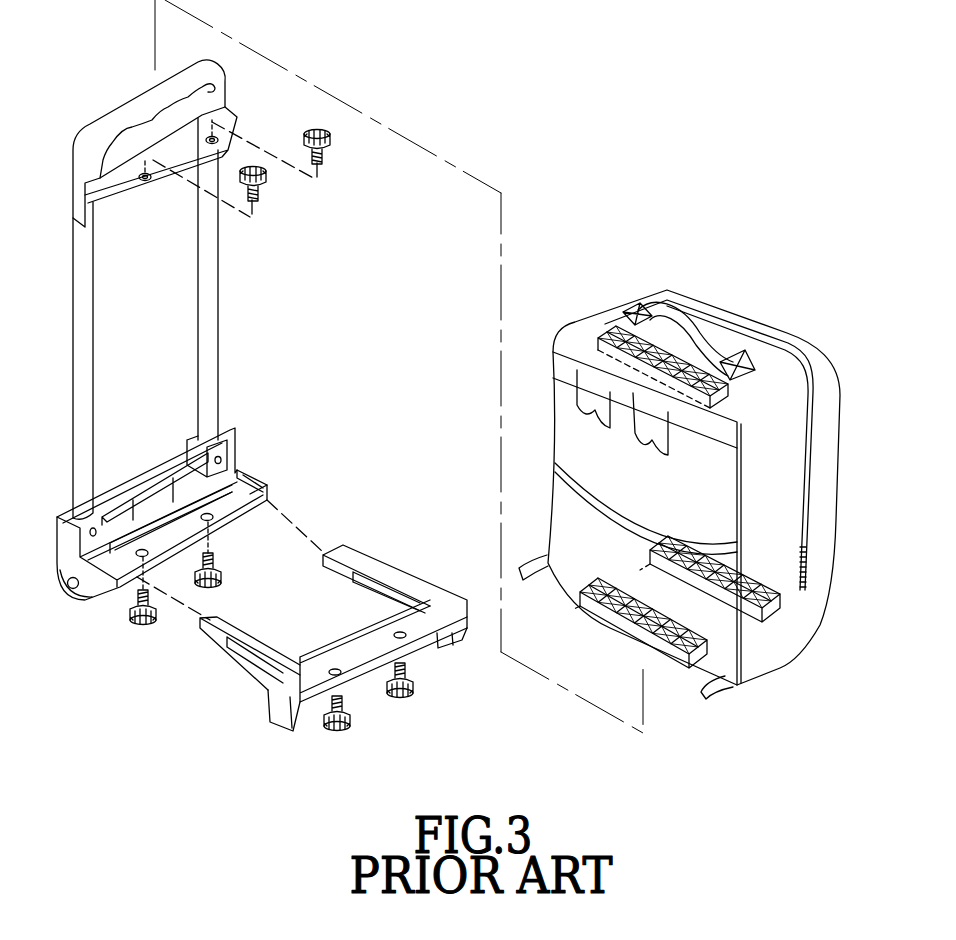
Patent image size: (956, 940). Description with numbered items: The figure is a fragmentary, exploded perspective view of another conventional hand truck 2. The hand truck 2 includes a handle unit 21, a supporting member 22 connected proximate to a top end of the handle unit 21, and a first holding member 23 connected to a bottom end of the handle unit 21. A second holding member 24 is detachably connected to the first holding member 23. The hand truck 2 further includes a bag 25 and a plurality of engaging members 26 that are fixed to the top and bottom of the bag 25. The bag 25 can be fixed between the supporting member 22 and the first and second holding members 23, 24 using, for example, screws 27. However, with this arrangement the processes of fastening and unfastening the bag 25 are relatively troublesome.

The hand truck 2 is at (240, 351).
The handle unit 21 is at (212, 288).
The supporting member 22 is at (128, 180).
The first holding member 23 is at (243, 477).
The second holding member 24 is at (428, 583).
The bag 25 is at (795, 348).
The engaging members 26 is at (683, 350).
The screws 27 is at (417, 700).